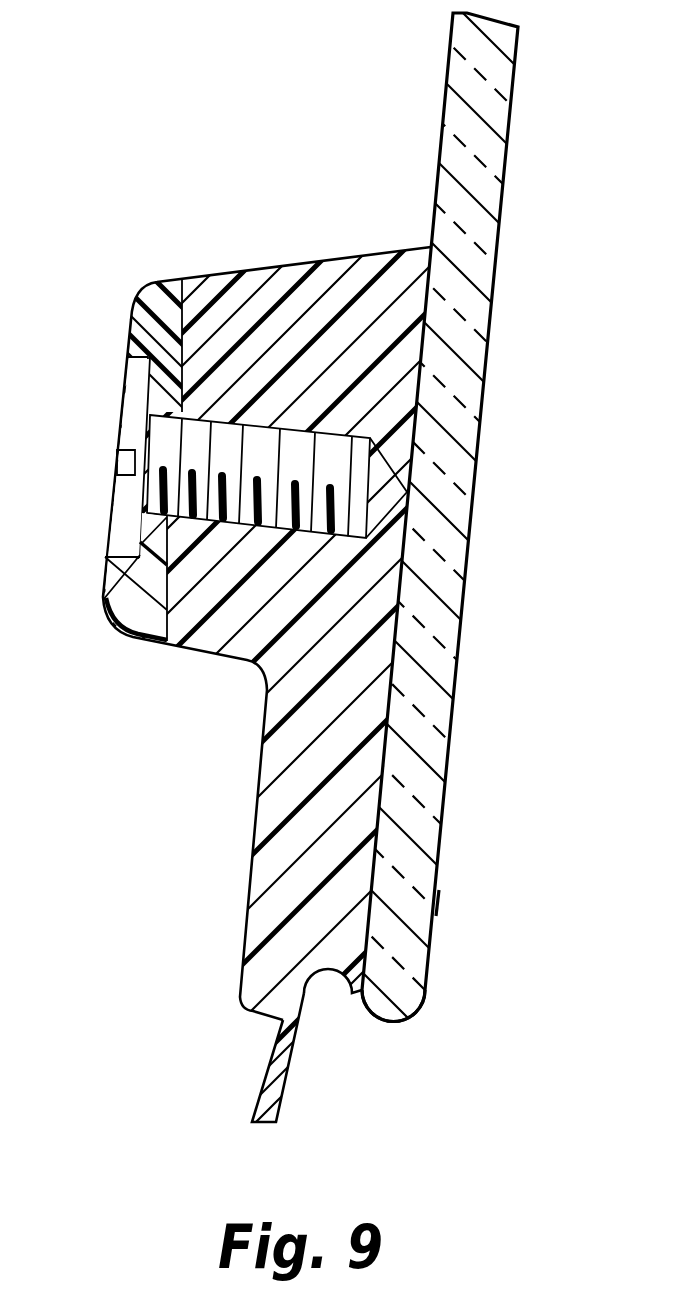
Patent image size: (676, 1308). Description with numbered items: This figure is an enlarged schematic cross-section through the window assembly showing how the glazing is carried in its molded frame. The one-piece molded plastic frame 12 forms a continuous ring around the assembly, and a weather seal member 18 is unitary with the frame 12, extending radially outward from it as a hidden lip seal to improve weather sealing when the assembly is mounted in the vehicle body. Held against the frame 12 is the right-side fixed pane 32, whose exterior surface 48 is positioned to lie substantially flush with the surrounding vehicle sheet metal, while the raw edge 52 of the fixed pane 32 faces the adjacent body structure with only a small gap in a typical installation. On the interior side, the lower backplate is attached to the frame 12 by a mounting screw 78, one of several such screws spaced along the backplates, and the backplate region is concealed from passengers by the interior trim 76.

The frame 12 is at (272, 763).
The seal member 18 is at (290, 1090).
The right-side fixed pane 32 is at (456, 672).
The exterior surface 48 is at (437, 903).
The raw edge 52 is at (392, 1022).
The interior trim 76 is at (157, 298).
The mounting screw 78 is at (105, 598).